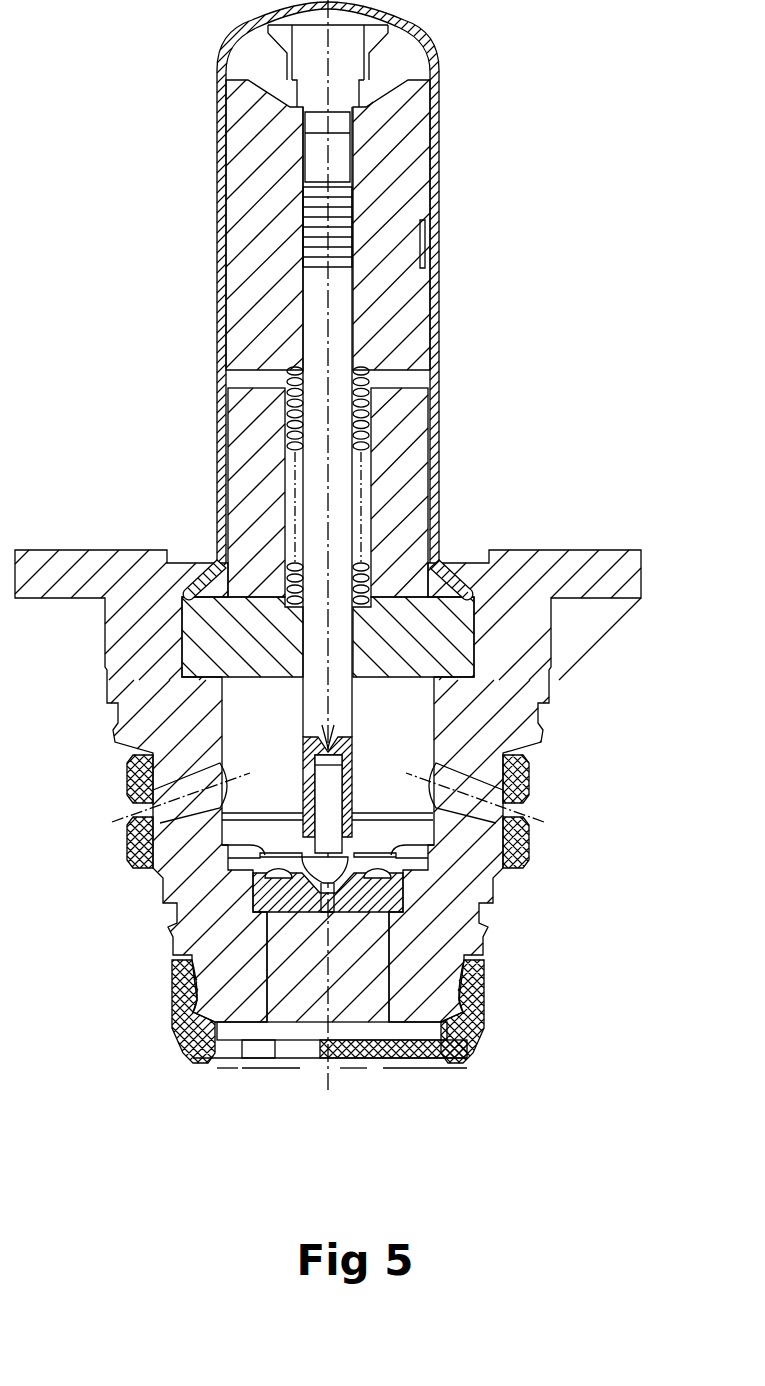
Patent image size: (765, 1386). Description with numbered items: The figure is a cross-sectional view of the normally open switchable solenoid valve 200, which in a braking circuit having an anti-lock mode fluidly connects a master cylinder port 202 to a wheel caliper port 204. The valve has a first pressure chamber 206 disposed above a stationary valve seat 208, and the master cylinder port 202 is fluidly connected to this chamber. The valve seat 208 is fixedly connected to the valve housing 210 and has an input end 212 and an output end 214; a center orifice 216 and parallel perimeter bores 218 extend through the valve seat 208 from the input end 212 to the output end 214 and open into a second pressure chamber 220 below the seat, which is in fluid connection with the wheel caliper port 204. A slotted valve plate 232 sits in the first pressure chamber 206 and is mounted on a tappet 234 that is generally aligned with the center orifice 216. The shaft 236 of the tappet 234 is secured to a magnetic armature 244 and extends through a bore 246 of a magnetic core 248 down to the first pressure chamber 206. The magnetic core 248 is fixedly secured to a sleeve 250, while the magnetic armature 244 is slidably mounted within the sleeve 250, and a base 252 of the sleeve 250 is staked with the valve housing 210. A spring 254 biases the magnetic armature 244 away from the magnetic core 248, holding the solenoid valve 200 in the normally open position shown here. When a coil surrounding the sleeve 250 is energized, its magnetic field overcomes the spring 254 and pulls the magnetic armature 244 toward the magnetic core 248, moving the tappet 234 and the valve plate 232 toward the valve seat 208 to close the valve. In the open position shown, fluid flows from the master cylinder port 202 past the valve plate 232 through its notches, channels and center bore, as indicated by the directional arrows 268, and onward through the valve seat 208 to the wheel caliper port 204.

The switchable solenoid valve 200 is at (552, 733).
The master cylinder port 202 is at (527, 813).
The wheel caliper port 204 is at (307, 1025).
The first pressure chamber 206 is at (383, 835).
The valve seat 208 is at (240, 900).
The valve housing 210 is at (218, 942).
The input end 212 is at (390, 860).
The output end 214 is at (357, 880).
The center orifice 216 is at (285, 890).
The perimeter bores 218 is at (487, 990).
The second pressure chamber 220 is at (410, 1063).
The slotted valve plate 232 is at (222, 838).
The tappet 234 is at (352, 513).
The shaft 236 is at (350, 737).
The magnetic armature 244 is at (372, 332).
The bore 246 is at (450, 573).
The magnetic core 248 is at (407, 437).
The sleeve 250 is at (437, 460).
The base 252 is at (193, 593).
The spring 254 is at (287, 408).
The directional arrows 268 is at (235, 945).